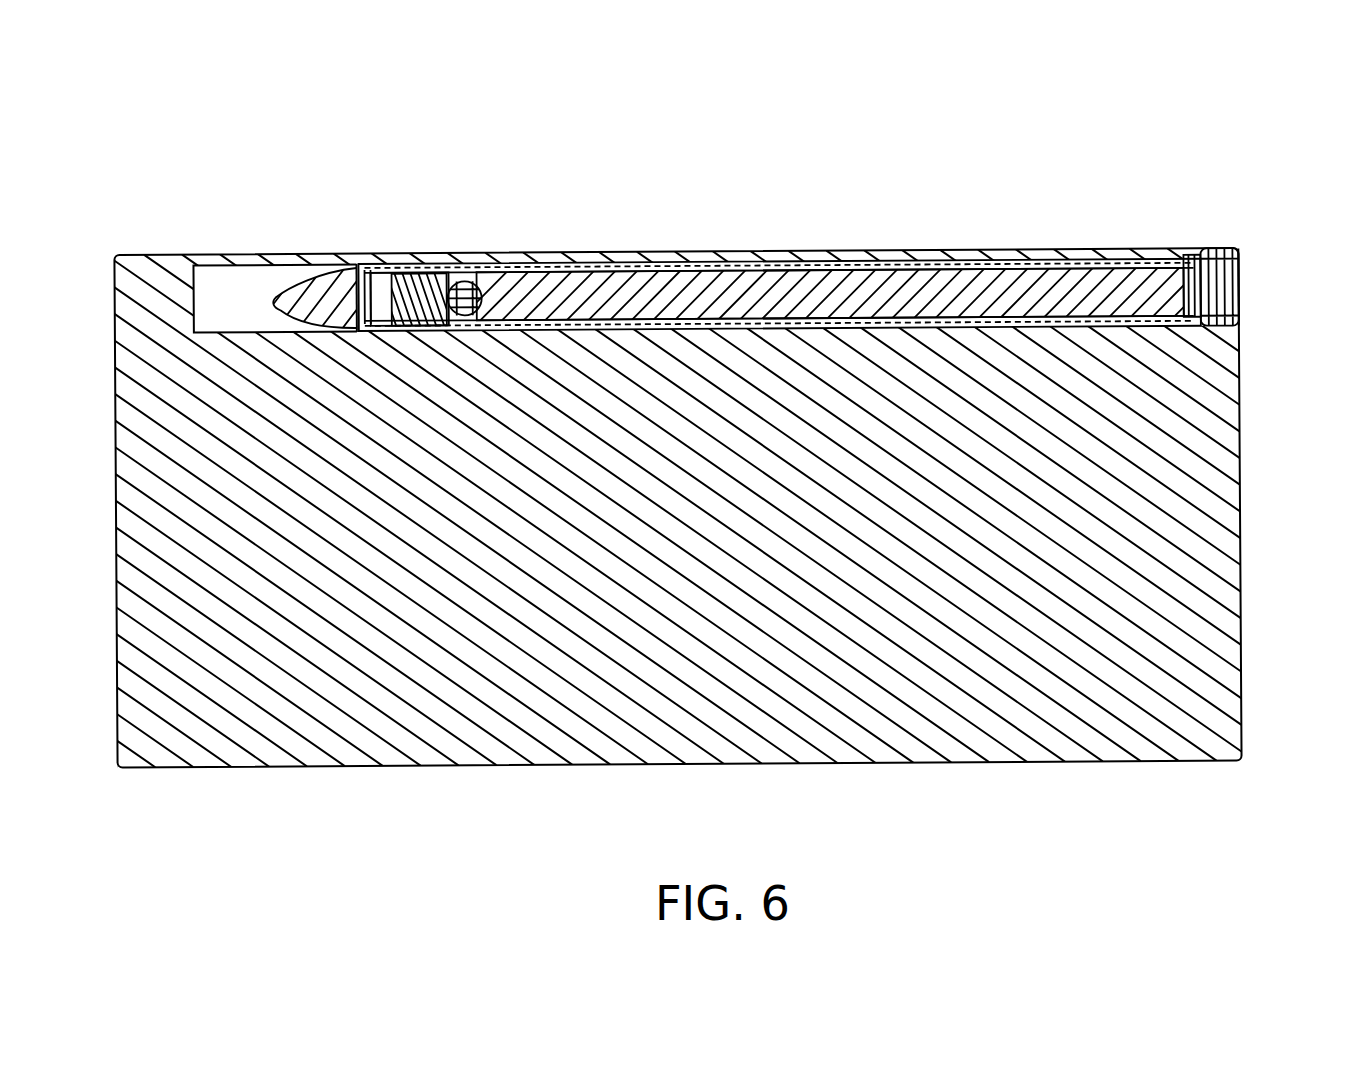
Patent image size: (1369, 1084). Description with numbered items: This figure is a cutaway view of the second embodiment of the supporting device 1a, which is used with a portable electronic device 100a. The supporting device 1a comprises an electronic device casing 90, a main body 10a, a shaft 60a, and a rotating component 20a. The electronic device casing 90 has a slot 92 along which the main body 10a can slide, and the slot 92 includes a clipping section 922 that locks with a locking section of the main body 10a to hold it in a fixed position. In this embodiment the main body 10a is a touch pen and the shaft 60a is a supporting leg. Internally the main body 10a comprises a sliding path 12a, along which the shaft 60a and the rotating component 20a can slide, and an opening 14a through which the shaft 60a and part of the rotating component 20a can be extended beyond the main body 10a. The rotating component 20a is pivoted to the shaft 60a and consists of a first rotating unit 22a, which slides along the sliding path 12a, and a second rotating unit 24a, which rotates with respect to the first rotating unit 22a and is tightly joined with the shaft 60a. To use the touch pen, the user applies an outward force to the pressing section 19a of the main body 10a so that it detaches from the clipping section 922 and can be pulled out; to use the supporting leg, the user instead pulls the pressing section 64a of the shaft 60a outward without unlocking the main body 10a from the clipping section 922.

The portable electronic device 100a is at (105, 160).
The electronic device casing 90 is at (165, 280).
The slot 92 is at (252, 265).
The clipping section 922 is at (365, 268).
The main body 10a is at (325, 275).
The supporting device 1a is at (567, 208).
The sliding path 12a is at (735, 265).
The rotating component 20a is at (425, 265).
The first rotating unit 22a is at (407, 268).
The second rotating unit 24a is at (440, 265).
The shaft 60a is at (918, 293).
The pressing section 19a is at (1205, 250).
The pressing section 64a is at (1228, 250).
The opening 14a is at (1248, 270).